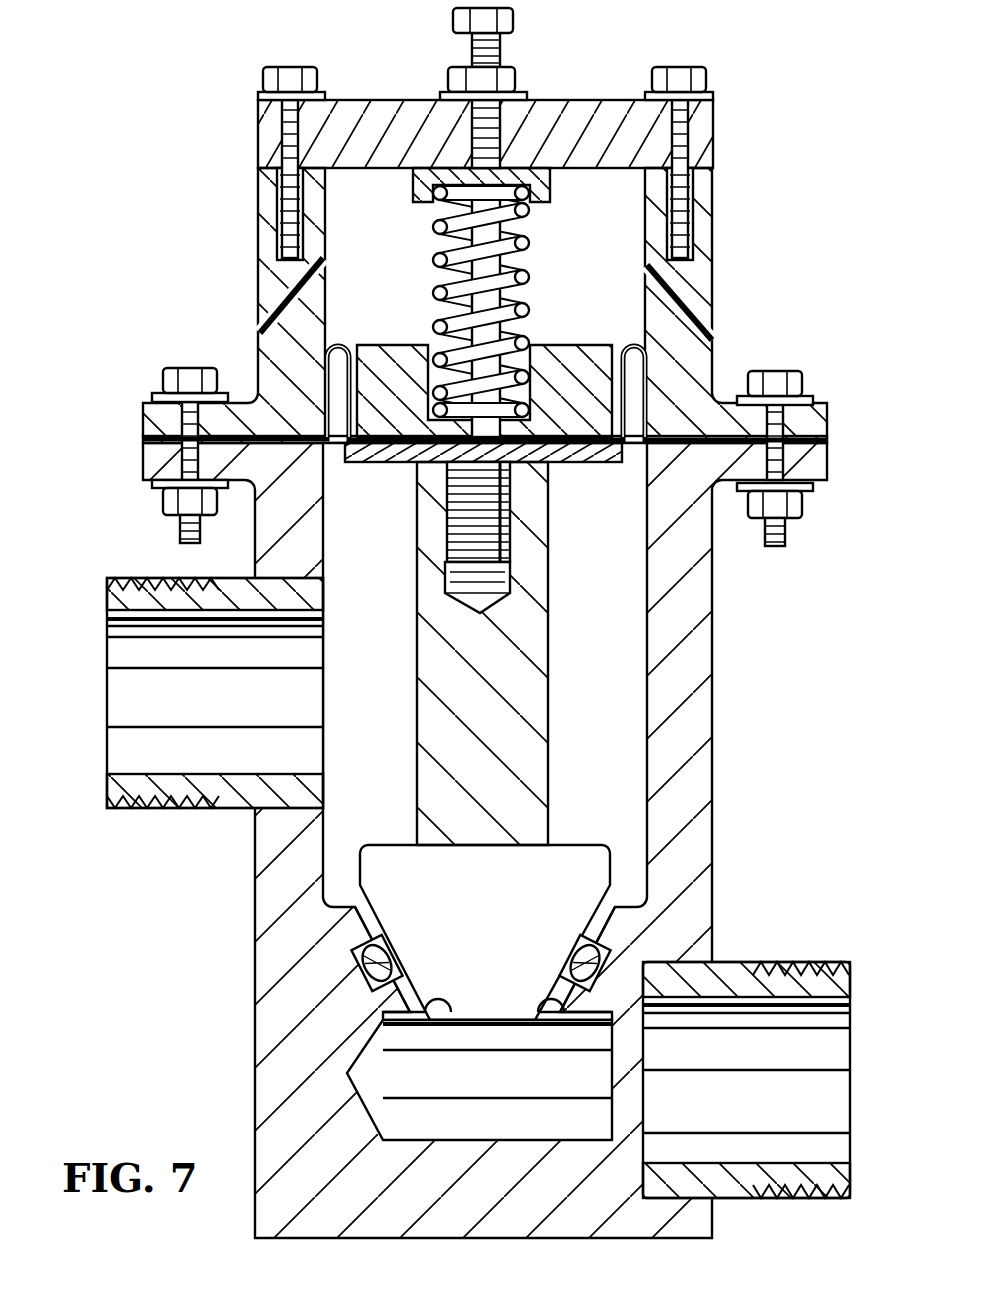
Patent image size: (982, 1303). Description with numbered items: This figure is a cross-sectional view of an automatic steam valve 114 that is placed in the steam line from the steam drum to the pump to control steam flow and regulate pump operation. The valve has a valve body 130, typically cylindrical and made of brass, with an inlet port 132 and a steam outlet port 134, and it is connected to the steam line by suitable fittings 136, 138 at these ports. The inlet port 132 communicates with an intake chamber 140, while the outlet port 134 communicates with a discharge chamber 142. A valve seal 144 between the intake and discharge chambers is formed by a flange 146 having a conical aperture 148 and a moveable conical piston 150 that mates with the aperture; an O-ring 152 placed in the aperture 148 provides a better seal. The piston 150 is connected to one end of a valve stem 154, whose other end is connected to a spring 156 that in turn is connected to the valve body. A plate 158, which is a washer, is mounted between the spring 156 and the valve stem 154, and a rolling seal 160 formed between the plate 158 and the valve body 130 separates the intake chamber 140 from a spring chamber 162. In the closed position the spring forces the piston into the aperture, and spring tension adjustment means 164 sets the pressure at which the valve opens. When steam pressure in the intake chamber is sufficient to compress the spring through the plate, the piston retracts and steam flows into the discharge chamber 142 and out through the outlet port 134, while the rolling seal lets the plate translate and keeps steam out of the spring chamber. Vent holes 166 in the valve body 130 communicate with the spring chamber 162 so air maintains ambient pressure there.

The automatic steam valve 114 is at (195, 138).
The valve body 130 is at (714, 664).
The inlet port 132 is at (224, 706).
The steam outlet port 134 is at (775, 1119).
The fitting 136 is at (175, 812).
The fitting 138 is at (798, 962).
The intake chamber 140 is at (622, 606).
The discharge chamber 142 is at (524, 1134).
The valve seal 144 is at (336, 875).
The flange 146 is at (402, 1013).
The conical aperture 148 is at (436, 1002).
The conical piston 150 is at (582, 840).
The O-ring 152 is at (362, 948).
The valve stem 154 is at (417, 680).
The spring 156 is at (535, 264).
The plate 158 is at (402, 465).
The rolling seal 160 is at (624, 352).
The spring chamber 162 is at (402, 276).
The spring tension adjustment means 164 is at (530, 68).
The vent holes 166 is at (290, 290).